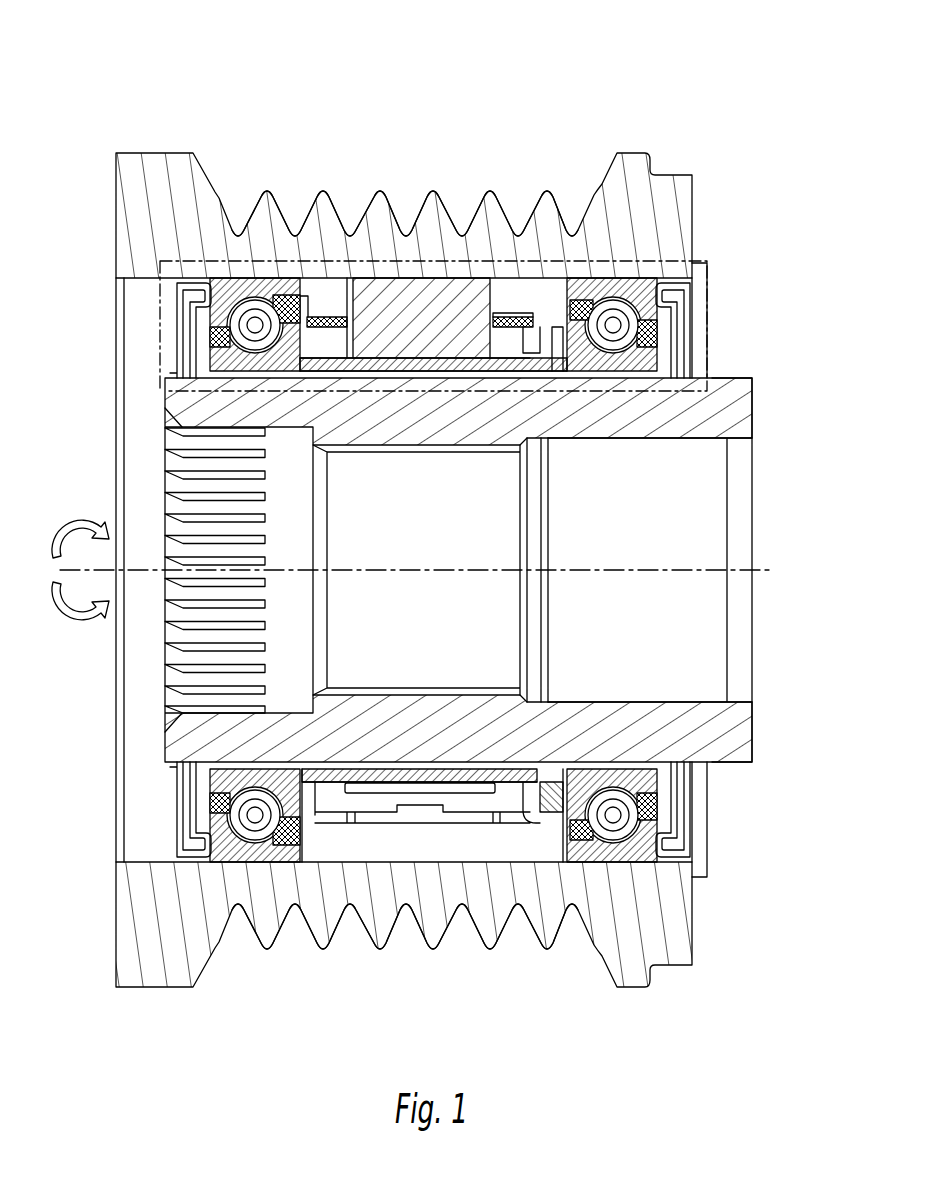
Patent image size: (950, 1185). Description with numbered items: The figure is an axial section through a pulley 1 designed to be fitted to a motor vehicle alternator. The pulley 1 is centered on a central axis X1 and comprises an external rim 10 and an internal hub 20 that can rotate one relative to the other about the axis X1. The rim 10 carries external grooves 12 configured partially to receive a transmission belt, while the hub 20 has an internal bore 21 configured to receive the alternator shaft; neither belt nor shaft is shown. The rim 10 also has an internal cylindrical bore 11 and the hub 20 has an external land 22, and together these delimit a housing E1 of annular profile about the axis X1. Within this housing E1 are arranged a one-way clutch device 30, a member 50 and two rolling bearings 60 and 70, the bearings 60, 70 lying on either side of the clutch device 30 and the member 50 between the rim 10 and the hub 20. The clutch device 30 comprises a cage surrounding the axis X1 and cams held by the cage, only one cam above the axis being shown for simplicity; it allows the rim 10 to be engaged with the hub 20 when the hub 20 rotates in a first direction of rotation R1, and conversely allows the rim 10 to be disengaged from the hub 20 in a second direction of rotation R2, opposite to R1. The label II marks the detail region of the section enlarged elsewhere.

The pulley 1 is at (98, 116).
The external rim 10 is at (663, 200).
The internal cylindrical bore 11 is at (515, 296).
The external grooves 12 is at (405, 220).
The internal hub 20 is at (754, 379).
The internal bore 21 is at (703, 497).
The external land 22 is at (733, 377).
The one-way clutch device 30 is at (328, 308).
The member 50 is at (396, 360).
The rolling bearing 60 is at (210, 340).
The rolling bearing 70 is at (708, 333).
The housing E1 is at (553, 297).
The detail section II is at (716, 276).
The central axis X1 is at (427, 571).
The first direction of rotation R1 is at (80, 618).
The second direction of rotation R2 is at (80, 526).